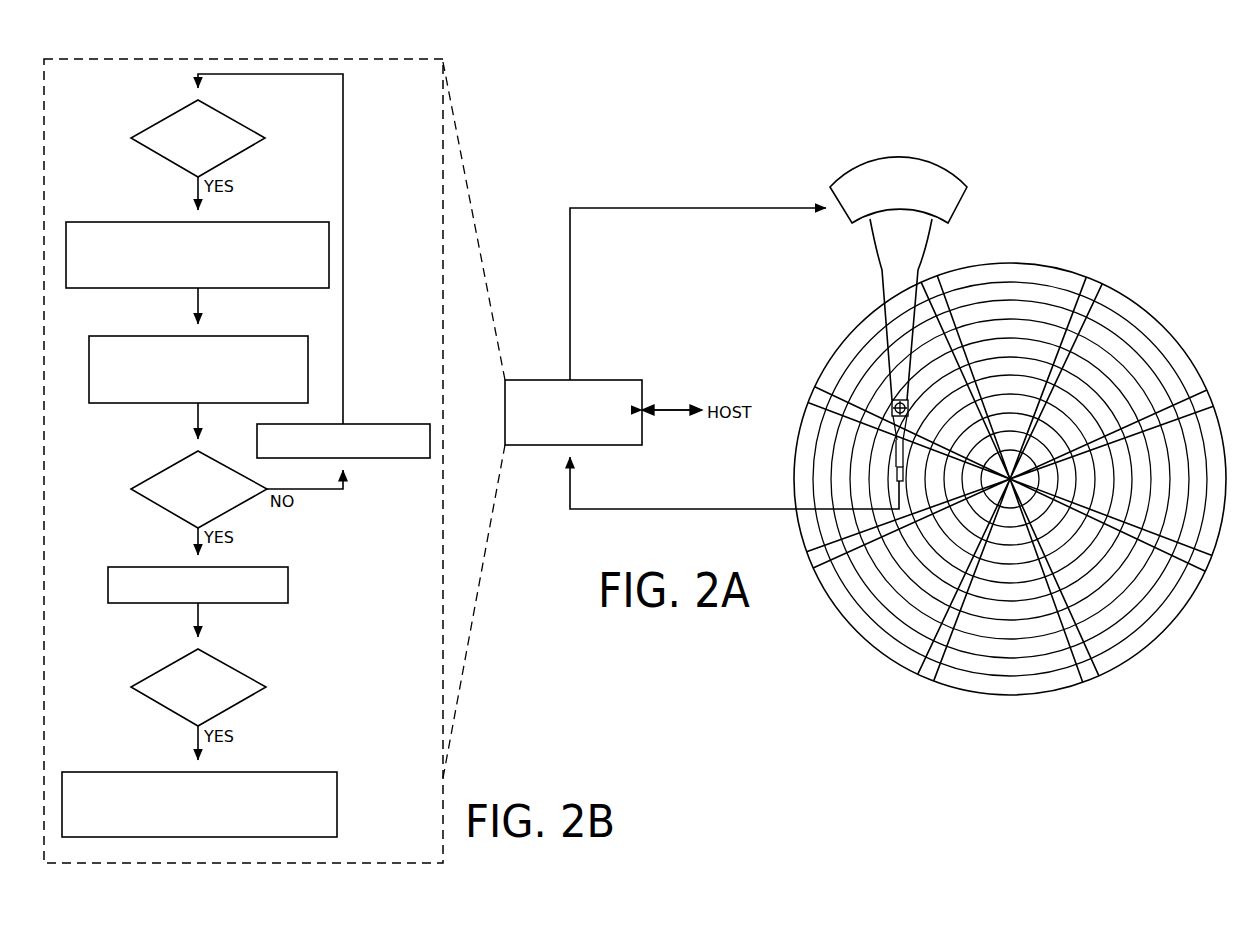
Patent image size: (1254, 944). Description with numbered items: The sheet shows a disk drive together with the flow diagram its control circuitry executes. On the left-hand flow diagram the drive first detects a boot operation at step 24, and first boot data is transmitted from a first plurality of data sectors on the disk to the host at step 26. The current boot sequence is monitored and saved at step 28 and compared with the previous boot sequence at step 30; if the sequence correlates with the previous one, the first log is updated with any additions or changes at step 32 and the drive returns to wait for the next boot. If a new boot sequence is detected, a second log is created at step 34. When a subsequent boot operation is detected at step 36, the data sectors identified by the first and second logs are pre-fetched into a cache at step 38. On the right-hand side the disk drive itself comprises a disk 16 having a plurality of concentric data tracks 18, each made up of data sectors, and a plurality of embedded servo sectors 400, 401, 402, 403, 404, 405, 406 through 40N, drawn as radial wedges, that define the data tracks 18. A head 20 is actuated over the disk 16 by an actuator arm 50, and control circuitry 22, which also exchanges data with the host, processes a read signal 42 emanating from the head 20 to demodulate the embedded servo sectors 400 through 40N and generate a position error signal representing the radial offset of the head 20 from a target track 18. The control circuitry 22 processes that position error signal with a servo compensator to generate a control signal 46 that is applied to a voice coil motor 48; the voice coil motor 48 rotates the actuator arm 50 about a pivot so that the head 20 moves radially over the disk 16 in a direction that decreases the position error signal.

In FIG. 2A, the disk 16 is at (1160, 310).
In FIG. 2A, the data tracks 18 is at (1006, 290).
In FIG. 2A, the head 20 is at (880, 488).
In FIG. 2A, the control circuitry 22 is at (612, 380).
In FIG. 2B, the first boot operation step 24 is at (232, 158).
In FIG. 2B, the transmit boot data step 26 is at (250, 290).
In FIG. 2B, the monitor boot sequence step 28 is at (148, 404).
In FIG. 2B, the new sequence decision step 30 is at (168, 513).
In FIG. 2B, the update first log step 32 is at (370, 459).
In FIG. 2B, the create second log step 34 is at (247, 604).
In FIG. 2B, the third boot operation step 36 is at (243, 705).
In FIG. 2B, the pre-fetch boot sectors step 38 is at (285, 772).
In FIG. 2A, the embedded servo sector 400 is at (1089, 284).
In FIG. 2A, the embedded servo sector 401 is at (1198, 407).
In FIG. 2A, the embedded servo sector 402 is at (1198, 564).
In FIG. 2A, the embedded servo sector 403 is at (1081, 672).
In FIG. 2A, the embedded servo sector 404 is at (924, 673).
In FIG. 2A, the embedded servo sector 405 is at (813, 560).
In FIG. 2A, the embedded servo sector 406 is at (819, 386).
In FIG. 2A, the embedded servo sector 40N is at (932, 284).
In FIG. 2A, the read signal 42 is at (734, 483).
In FIG. 2A, the control signal 46 is at (570, 282).
In FIG. 2A, the voice coil motor 48 is at (847, 224).
In FIG. 2A, the actuator arm 50 is at (882, 294).